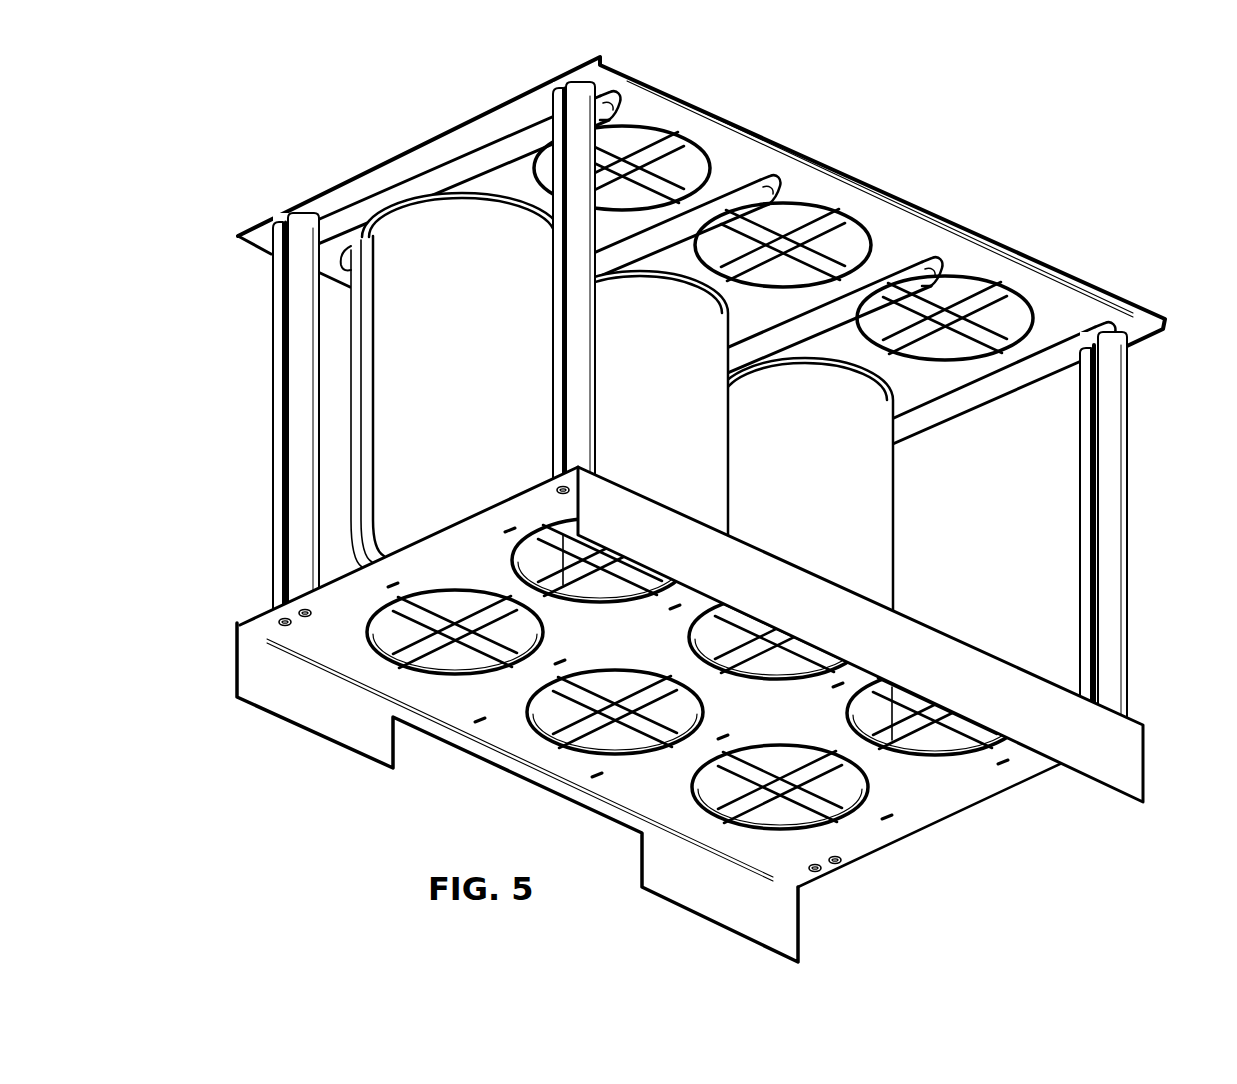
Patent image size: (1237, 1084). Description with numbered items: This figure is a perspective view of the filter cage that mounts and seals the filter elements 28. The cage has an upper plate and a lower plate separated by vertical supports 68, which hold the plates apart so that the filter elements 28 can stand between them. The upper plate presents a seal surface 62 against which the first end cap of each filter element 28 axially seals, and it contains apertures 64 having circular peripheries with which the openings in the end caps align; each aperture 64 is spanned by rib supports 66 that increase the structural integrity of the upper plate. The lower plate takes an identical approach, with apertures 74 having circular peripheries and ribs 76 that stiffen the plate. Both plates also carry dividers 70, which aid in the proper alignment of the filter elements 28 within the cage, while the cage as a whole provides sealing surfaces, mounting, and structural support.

The filter elements 28 is at (400, 333).
The seal surface 62 is at (1090, 358).
The apertures 64 is at (910, 340).
The rib supports 66 is at (908, 342).
The vertical supports 68 is at (272, 370).
The dividers 70 is at (611, 95).
The apertures 74 is at (453, 592).
The ribs 76 is at (262, 626).